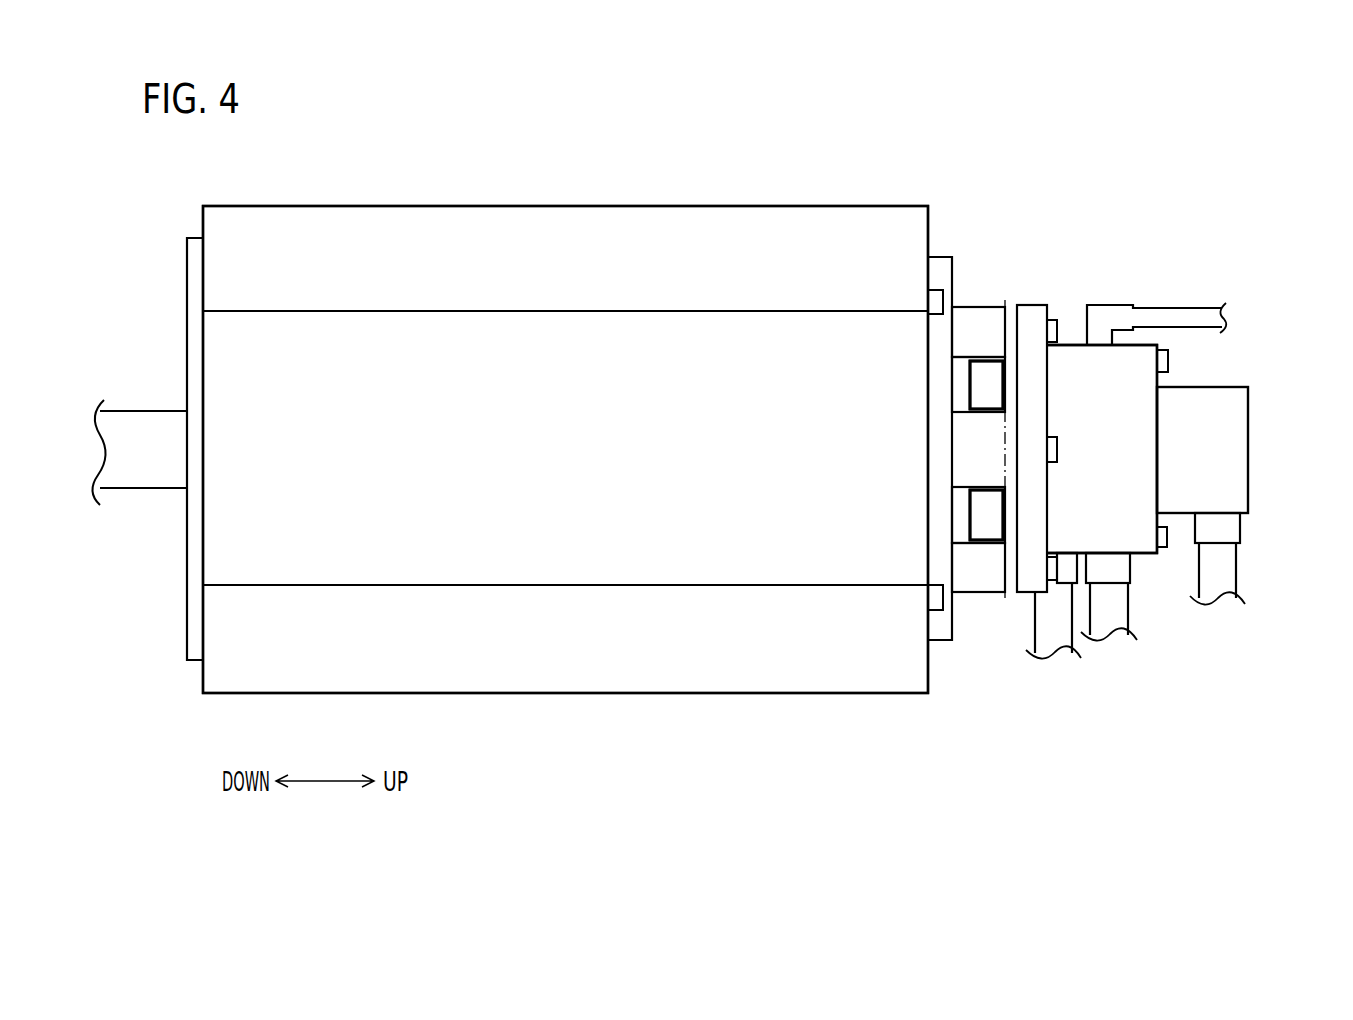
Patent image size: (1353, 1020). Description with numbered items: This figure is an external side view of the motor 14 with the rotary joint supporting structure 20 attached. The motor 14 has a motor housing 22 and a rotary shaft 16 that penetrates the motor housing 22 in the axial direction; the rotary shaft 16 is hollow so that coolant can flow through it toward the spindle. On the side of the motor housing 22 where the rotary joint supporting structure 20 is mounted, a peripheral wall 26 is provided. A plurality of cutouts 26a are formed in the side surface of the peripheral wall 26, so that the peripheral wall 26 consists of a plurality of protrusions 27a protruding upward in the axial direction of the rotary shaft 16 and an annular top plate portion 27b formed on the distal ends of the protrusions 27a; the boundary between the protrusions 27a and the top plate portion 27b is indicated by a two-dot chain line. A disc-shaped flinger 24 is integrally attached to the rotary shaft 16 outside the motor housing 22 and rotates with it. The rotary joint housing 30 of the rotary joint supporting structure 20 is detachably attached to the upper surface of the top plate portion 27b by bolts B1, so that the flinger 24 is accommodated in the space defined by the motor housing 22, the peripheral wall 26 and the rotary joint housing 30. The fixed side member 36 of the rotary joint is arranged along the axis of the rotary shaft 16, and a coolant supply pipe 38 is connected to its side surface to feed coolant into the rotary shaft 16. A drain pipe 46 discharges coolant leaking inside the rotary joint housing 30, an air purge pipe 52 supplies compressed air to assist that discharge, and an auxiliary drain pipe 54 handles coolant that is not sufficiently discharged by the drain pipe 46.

The motor 14 is at (571, 190).
The motor housing 22 is at (677, 205).
The rotary shaft 16 is at (150, 407).
The protrusions 27a is at (975, 322).
The top plate portion 27b is at (1010, 393).
The peripheral wall 26 is at (950, 458).
The cutouts 26a is at (965, 383).
The flinger 24 is at (978, 523).
The bolts B1 is at (1052, 322).
The rotary joint supporting structure 20 is at (1165, 296).
The rotary joint housing 30 is at (1135, 363).
The air purge pipe 52 is at (1197, 308).
The fixed side member 36 is at (1250, 440).
The coolant supply pipe 38 is at (1218, 573).
The drain pipe 46 is at (1117, 608).
The auxiliary drain pipe 54 is at (1055, 645).